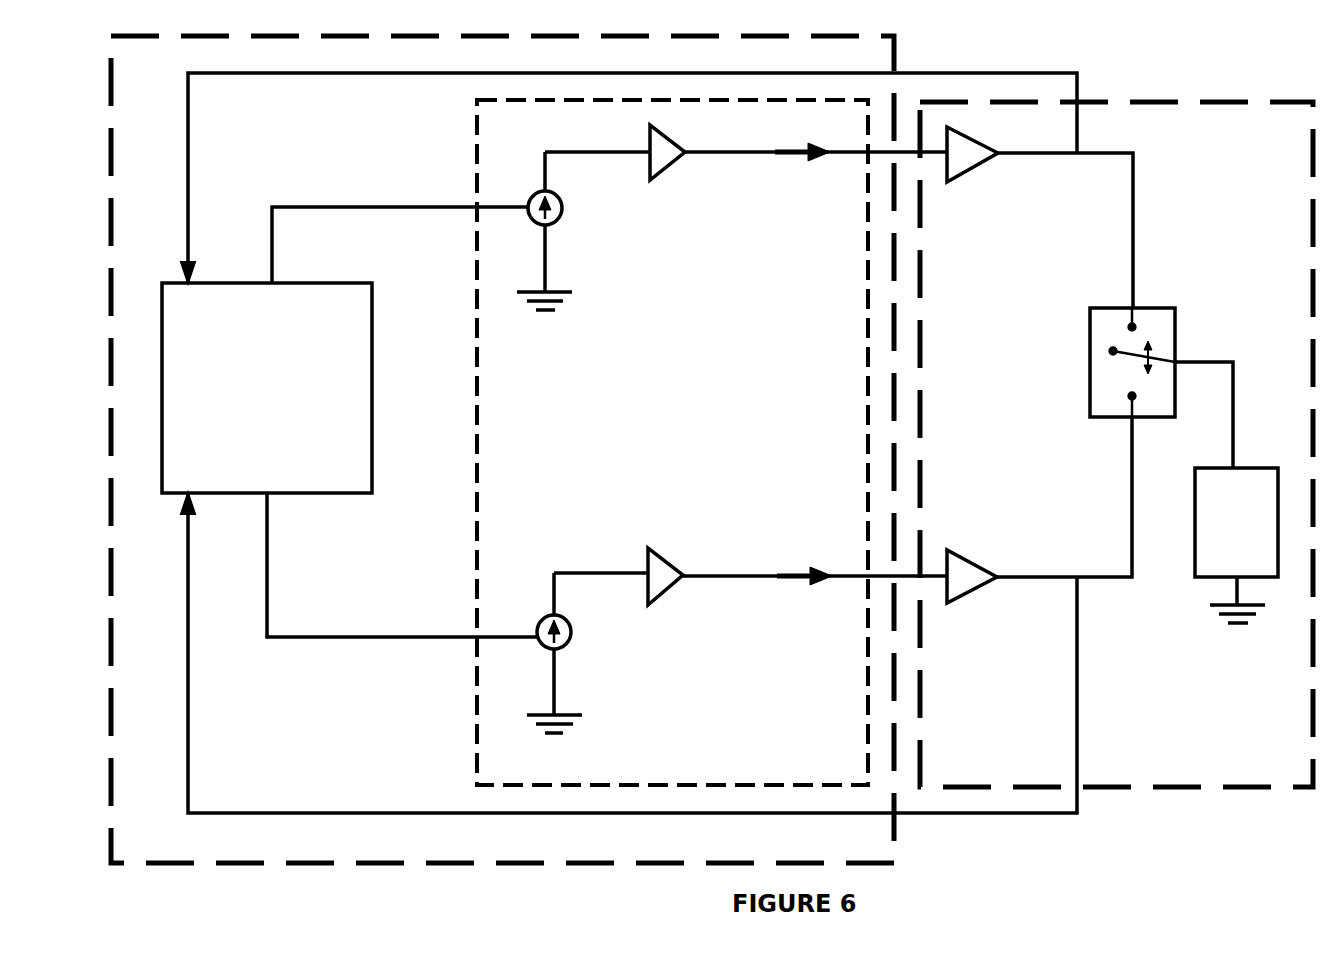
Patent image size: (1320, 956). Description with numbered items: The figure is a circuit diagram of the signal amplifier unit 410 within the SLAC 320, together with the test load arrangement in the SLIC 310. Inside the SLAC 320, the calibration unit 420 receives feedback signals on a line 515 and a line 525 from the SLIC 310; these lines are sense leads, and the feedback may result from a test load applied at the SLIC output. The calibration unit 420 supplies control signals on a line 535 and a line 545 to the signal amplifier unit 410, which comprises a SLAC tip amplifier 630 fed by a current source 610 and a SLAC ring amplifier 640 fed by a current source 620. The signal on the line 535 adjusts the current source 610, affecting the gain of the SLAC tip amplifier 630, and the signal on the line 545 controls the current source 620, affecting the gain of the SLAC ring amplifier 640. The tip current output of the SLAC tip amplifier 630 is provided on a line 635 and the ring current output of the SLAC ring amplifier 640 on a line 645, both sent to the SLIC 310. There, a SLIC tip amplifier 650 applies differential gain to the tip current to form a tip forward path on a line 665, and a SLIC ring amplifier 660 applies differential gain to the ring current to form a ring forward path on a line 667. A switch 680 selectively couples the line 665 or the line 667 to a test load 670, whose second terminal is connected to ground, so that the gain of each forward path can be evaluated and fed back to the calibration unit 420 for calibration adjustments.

The SLIC 310 is at (1197, 787).
The SLAC 320 is at (195, 863).
The signal amplifier unit 410 is at (477, 690).
The calibration unit 420 is at (372, 310).
The line 515 is at (188, 100).
The line 525 is at (188, 625).
The line 535 is at (314, 207).
The line 545 is at (350, 637).
The current source 610 is at (563, 215).
The current source 620 is at (575, 630).
The SLAC tip amplifier 630 is at (672, 162).
The SLAC ring amplifier 640 is at (657, 548).
The line 635 is at (712, 155).
The line 645 is at (727, 573).
The SLIC tip amplifier 650 is at (985, 160).
The SLIC ring amplifier 660 is at (985, 585).
The line 665 is at (1133, 248).
The line 667 is at (1128, 552).
The test load 670 is at (1193, 548).
The switch 680 is at (1090, 328).